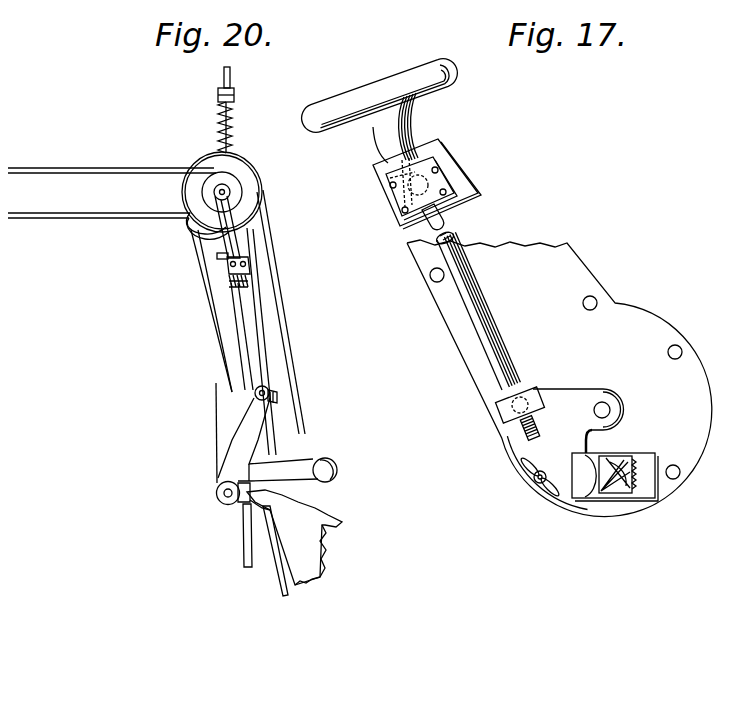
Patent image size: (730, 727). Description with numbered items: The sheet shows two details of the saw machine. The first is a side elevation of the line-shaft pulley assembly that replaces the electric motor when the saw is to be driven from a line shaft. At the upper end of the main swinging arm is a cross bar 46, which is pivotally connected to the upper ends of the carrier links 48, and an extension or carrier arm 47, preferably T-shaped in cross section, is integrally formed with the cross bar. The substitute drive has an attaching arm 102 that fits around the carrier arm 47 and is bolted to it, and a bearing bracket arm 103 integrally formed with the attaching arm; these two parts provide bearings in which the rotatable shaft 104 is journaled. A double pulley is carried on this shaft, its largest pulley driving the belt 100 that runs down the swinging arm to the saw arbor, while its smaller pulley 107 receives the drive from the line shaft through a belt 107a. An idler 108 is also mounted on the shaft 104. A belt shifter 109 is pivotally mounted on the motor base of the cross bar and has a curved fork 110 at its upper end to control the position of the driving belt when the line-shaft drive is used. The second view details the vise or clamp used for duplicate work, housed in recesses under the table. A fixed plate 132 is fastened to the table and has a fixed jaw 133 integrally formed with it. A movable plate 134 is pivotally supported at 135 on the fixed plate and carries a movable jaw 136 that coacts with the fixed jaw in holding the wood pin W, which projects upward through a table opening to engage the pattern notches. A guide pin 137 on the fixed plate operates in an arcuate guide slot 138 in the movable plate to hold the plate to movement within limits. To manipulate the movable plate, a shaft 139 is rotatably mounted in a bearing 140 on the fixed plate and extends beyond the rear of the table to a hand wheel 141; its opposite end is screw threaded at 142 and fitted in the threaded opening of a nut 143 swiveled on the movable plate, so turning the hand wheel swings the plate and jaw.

In FIG. 20, the belt 107a is at (82, 170).
In FIG. 20, the smaller pulley 107 is at (200, 192).
In FIG. 20, the rotatable shaft 104 is at (236, 193).
In FIG. 20, the idler 108 is at (229, 188).
In FIG. 20, the curved fork 110 is at (193, 233).
In FIG. 20, the bearing bracket arm 103 is at (239, 238).
In FIG. 20, the attaching arm 102 is at (245, 268).
In FIG. 20, the belt 100 is at (268, 223).
In FIG. 20, the belt shifter 109 is at (230, 313).
In FIG. 20, the carrier arm 47 is at (262, 331).
In FIG. 20, the cross bar 46 is at (245, 387).
In FIG. 20, the carrier links 48 is at (253, 427).
In FIG. 17, the hand wheel 141 is at (367, 91).
In FIG. 17, the bearing 140 is at (433, 177).
In FIG. 17, the fixed plate 132 is at (637, 318).
In FIG. 17, the shaft 139 is at (481, 303).
In FIG. 17, the nut 143 is at (532, 390).
In FIG. 17, the movable plate 134 is at (576, 390).
In FIG. 17, the pivot 135 is at (606, 406).
In FIG. 17, the movable jaw 136 is at (581, 462).
In FIG. 17, the fixed jaw 133 is at (645, 460).
In FIG. 17, the screw thread 142 is at (519, 432).
In FIG. 17, the arcuate guide slot 138 is at (532, 470).
In FIG. 17, the guide pin 137 is at (536, 487).
In FIG. 17, the wood pin W is at (617, 494).